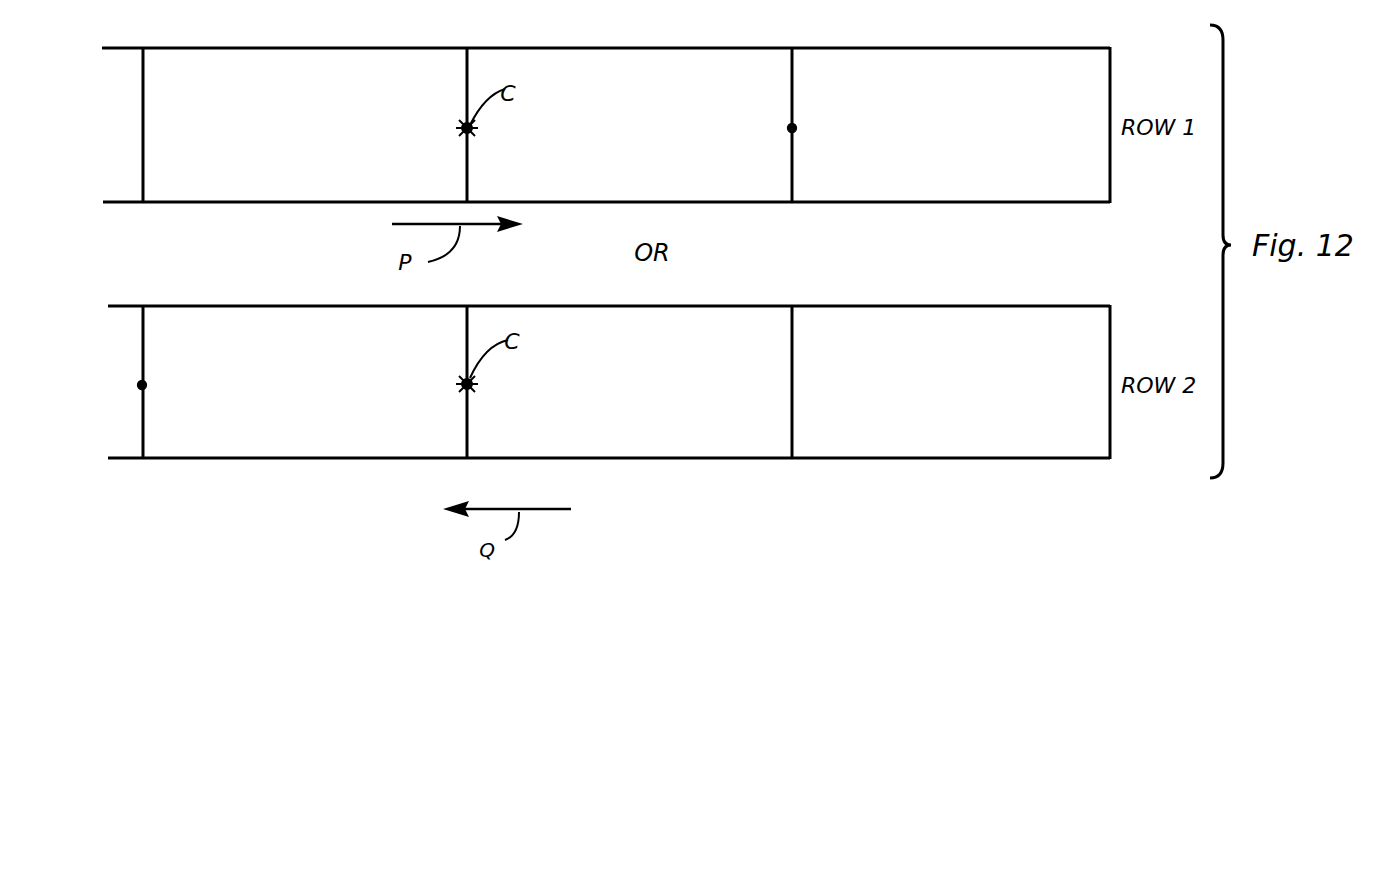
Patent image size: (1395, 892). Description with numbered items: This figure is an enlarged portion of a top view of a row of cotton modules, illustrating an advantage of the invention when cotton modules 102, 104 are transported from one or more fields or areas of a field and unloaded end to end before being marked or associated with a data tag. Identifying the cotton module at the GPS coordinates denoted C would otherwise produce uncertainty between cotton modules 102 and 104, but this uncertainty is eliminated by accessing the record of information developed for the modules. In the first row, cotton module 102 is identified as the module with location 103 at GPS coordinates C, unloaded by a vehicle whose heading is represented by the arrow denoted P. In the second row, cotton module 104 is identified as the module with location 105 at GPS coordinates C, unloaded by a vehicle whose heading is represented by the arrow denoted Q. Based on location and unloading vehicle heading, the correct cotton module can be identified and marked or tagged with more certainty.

The cotton module 102 is at (305, 253).
The location 103 is at (463, 130).
The cotton module 104 is at (629, 253).
The location 105 is at (794, 128).